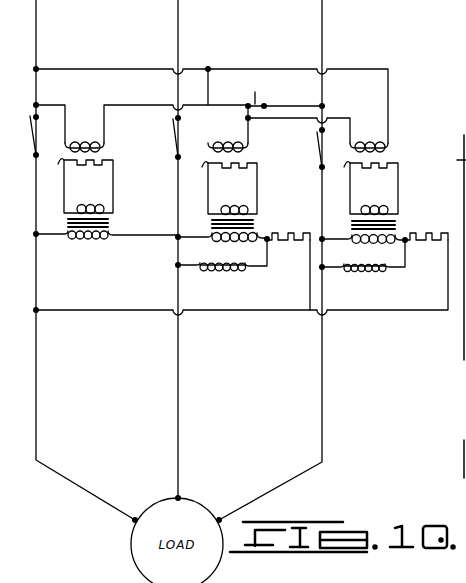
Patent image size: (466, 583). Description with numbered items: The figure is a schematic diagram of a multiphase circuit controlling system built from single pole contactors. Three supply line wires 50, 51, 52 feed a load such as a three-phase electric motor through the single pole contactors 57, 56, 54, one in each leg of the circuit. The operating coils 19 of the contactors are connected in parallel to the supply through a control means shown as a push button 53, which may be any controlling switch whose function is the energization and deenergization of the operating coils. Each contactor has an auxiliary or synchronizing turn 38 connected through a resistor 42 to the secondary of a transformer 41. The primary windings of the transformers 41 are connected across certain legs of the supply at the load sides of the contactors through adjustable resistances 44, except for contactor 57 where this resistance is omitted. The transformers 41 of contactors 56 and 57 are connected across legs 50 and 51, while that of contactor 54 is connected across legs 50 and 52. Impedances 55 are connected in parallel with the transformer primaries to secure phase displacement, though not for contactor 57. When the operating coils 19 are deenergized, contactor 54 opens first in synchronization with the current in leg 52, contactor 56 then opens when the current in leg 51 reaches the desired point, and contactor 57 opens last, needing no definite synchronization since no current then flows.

The operating coil 19 is at (84, 144).
The auxiliary or synchronizing turn 38 is at (58, 163).
The transformer 41 is at (112, 227).
The resistor 42 is at (231, 187).
The adjustable resistance 44 is at (296, 237).
The line wire 50 is at (36, 36).
The line wire 51 is at (178, 37).
The line wire 52 is at (322, 32).
The push button 53 is at (268, 104).
The single pole contactor 54 is at (318, 148).
The impedance 55 is at (203, 274).
The single pole contactor 56 is at (175, 136).
The single pole contactor 57 is at (47, 137).